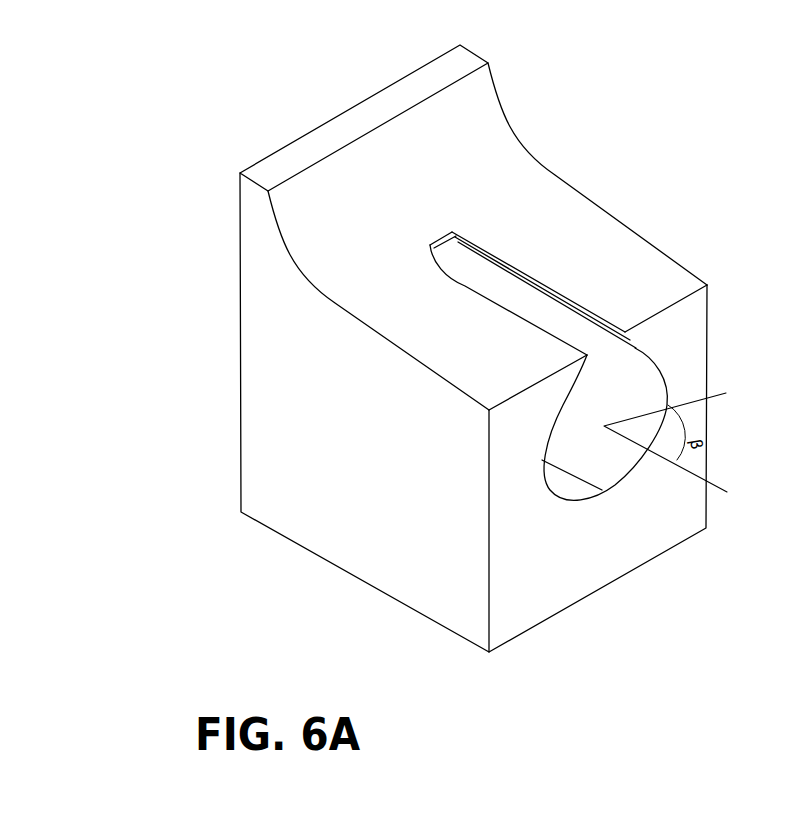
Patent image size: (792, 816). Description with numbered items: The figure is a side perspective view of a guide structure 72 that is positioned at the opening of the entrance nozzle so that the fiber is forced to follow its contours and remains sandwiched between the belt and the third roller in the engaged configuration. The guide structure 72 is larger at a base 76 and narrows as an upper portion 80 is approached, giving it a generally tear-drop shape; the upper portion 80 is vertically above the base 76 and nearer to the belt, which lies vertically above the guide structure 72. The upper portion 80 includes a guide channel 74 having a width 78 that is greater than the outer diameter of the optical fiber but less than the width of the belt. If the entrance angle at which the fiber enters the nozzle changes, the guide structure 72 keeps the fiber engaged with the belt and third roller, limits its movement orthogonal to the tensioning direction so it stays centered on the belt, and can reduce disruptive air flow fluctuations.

The guide structure 72 is at (245, 141).
The guide channel 74 is at (538, 285).
The base 76 is at (590, 500).
The width 78 is at (470, 280).
The upper portion 80 is at (637, 348).